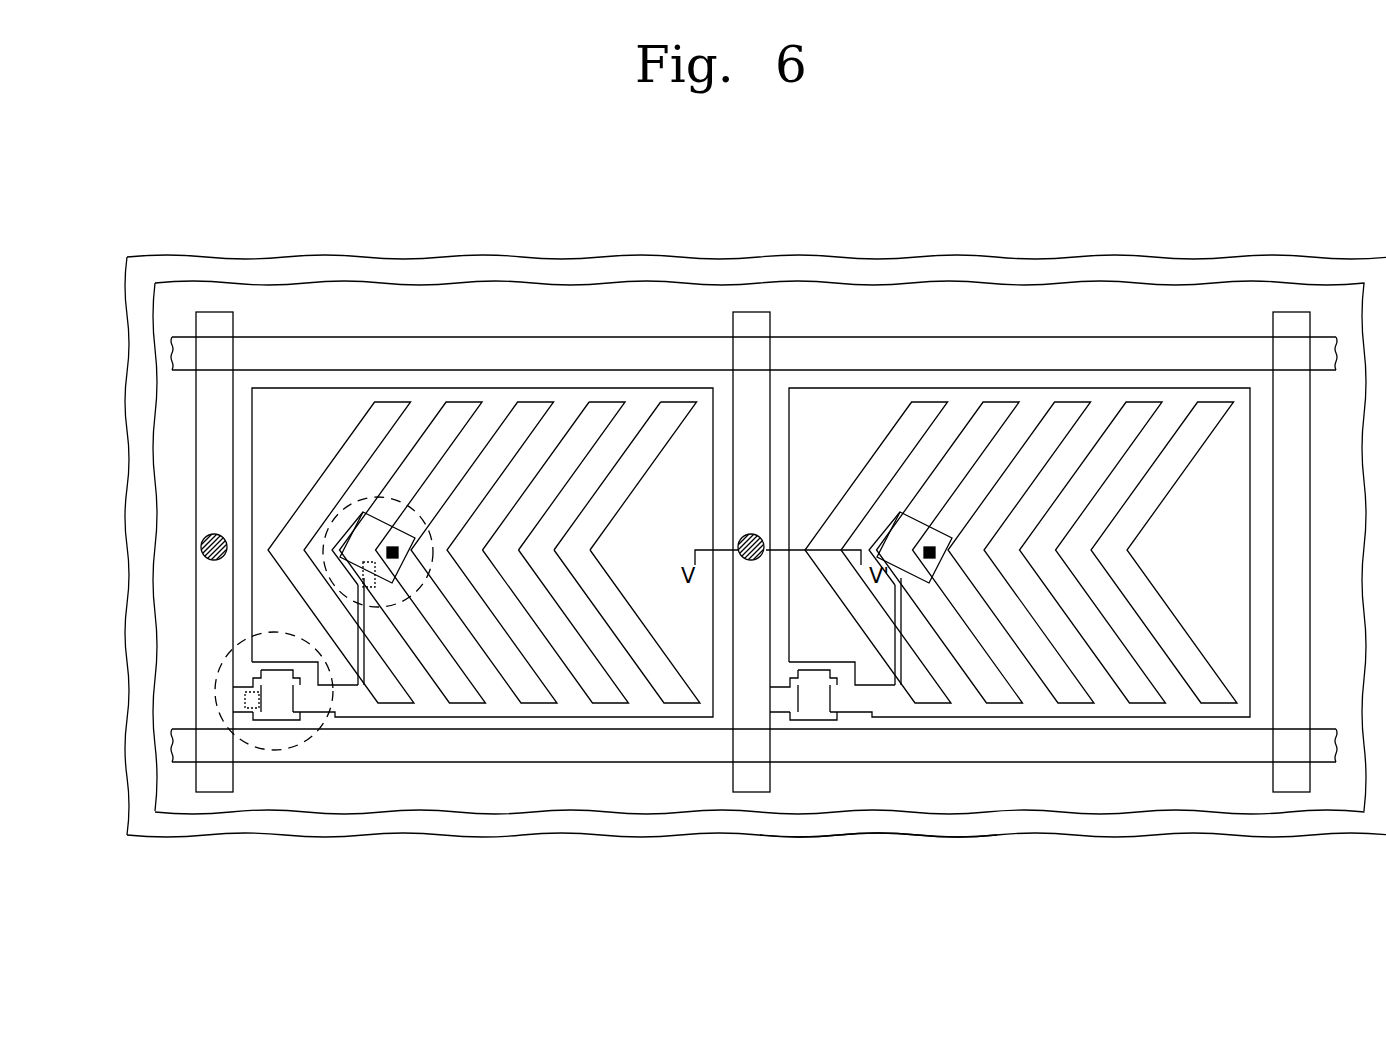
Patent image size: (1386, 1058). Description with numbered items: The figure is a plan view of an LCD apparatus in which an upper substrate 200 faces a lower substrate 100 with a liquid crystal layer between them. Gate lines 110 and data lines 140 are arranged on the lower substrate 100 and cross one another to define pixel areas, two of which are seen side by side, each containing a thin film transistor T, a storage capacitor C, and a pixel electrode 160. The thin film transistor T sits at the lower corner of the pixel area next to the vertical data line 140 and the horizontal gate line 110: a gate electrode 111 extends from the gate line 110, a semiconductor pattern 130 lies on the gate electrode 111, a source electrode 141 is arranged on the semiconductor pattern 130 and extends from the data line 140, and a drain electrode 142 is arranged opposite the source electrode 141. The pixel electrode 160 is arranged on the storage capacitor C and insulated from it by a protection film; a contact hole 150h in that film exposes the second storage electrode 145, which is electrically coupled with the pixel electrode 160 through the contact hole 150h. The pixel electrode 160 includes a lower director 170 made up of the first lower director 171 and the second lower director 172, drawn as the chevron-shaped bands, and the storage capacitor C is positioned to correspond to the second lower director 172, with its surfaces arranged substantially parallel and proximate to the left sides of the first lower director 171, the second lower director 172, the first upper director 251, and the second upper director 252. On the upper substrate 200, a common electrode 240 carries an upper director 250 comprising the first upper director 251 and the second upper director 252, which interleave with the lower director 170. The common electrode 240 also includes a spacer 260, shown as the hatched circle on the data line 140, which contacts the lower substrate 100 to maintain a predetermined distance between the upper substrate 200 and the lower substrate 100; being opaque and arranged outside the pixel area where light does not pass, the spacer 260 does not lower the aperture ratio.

The lower substrate 100 is at (748, 822).
The gate line 110 is at (180, 352).
The gate electrode 111 is at (282, 722).
The semiconductor pattern 130 is at (272, 720).
The data line 140 is at (217, 311).
The source electrode 141 is at (257, 713).
The drain electrode 142 is at (320, 720).
The second storage electrode 145 is at (352, 530).
The contact hole 150h is at (392, 545).
The pixel electrode 160 is at (509, 720).
The lower director 170 is at (522, 443).
The first lower director 171 is at (565, 478).
The second lower director 172 is at (578, 648).
The upper substrate 200 is at (890, 836).
The common electrode 240 is at (823, 825).
The upper director 250 is at (486, 655).
The first upper director 251 is at (607, 518).
The second upper director 252 is at (622, 610).
The spacer 260 is at (197, 546).
The storage capacitor C is at (413, 517).
The thin film transistor T is at (305, 737).